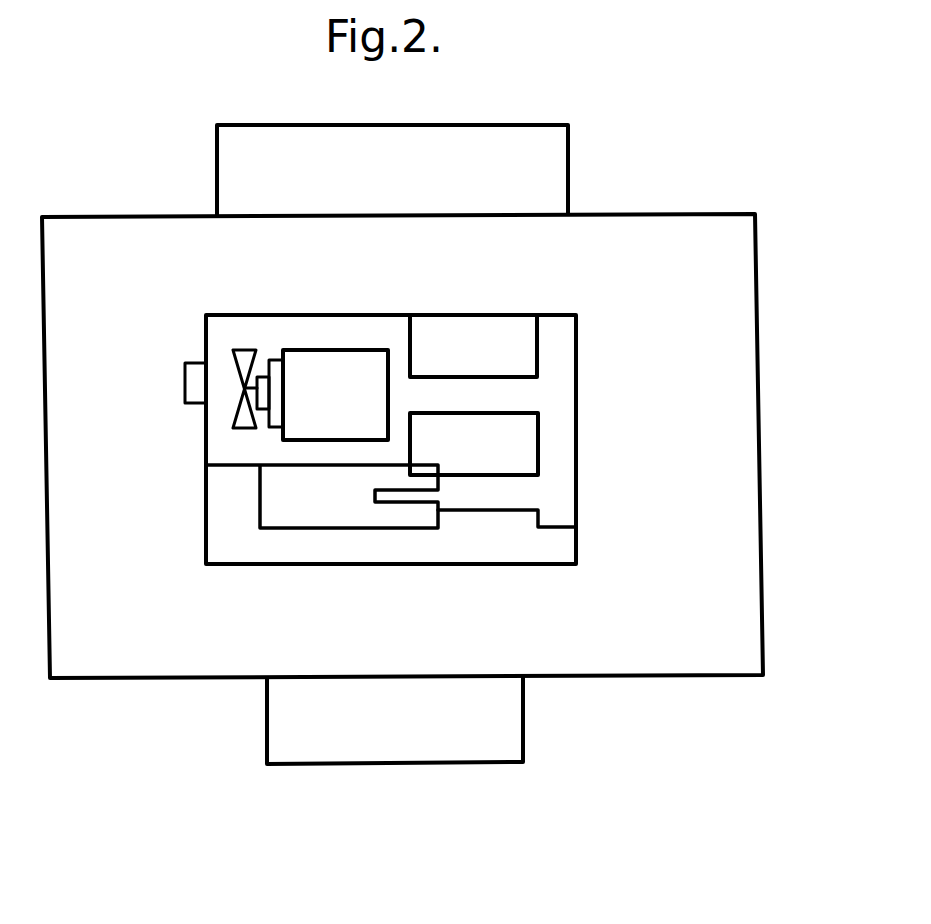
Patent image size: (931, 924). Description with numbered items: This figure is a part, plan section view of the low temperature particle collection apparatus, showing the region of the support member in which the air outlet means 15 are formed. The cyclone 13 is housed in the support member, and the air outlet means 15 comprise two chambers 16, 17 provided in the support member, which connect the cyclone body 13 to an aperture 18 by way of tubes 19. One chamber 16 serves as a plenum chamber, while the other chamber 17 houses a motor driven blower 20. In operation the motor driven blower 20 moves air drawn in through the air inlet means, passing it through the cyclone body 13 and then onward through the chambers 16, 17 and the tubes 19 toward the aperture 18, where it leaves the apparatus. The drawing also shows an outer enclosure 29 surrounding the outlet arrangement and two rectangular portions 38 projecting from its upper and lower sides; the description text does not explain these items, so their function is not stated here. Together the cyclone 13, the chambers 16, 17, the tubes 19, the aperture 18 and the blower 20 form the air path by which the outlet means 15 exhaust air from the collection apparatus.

The cyclone 13 is at (292, 512).
The air outlet means 15 is at (399, 439).
The chamber 16 is at (565, 500).
The chamber 17 is at (390, 330).
The aperture 18 is at (192, 383).
The tubes 19 is at (498, 382).
The motor driven blower 20 is at (235, 417).
The housing 29 is at (765, 643).
The cover / attachment boxes 38 is at (483, 130).